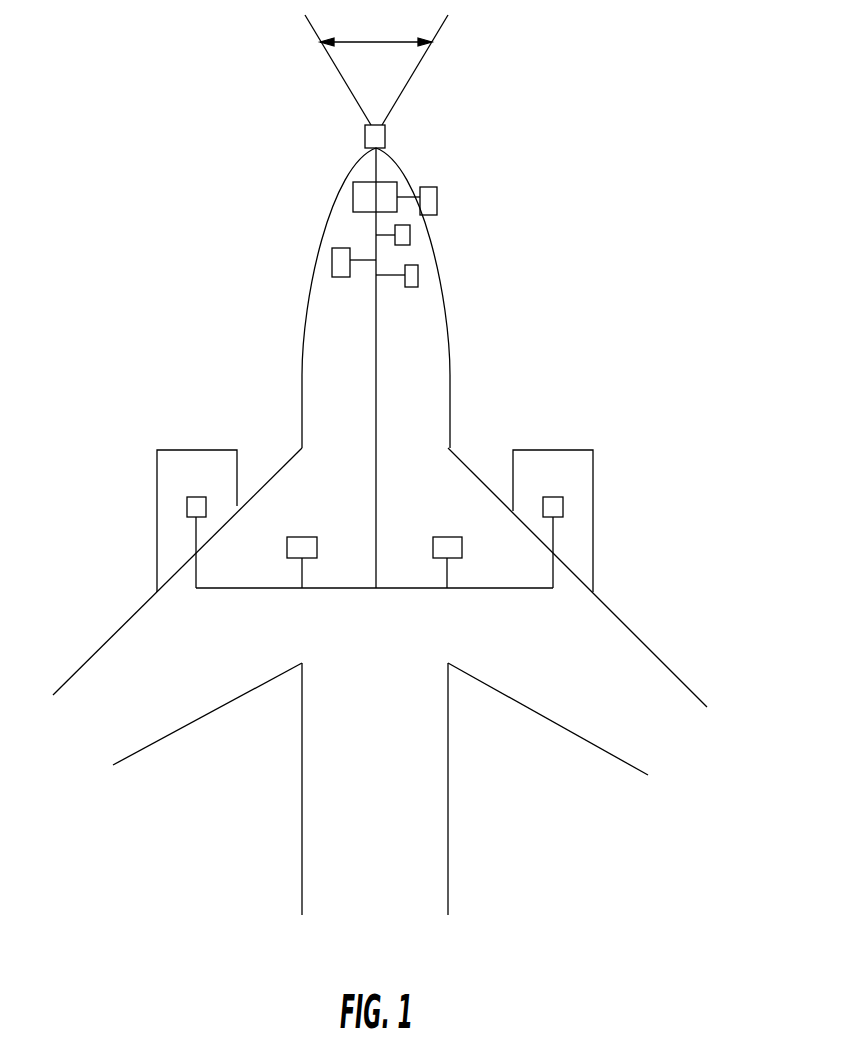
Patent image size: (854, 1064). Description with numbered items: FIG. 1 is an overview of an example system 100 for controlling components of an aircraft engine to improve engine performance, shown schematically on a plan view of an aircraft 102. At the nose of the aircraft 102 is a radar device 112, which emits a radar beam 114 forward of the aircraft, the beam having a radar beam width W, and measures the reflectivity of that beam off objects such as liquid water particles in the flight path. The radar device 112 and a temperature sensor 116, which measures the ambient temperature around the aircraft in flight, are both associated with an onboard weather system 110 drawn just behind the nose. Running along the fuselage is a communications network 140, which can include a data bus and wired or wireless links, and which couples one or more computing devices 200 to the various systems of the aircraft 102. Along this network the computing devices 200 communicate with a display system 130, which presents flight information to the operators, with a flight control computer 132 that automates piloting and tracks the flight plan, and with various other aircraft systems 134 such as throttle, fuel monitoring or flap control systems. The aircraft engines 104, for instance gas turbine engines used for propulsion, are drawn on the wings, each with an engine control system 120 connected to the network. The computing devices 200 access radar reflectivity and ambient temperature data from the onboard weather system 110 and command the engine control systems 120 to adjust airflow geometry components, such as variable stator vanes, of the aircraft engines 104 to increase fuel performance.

The system 100 is at (670, 170).
The aircraft 102 is at (437, 330).
The aircraft engines 104 is at (190, 462).
The onboard weather system 110 is at (353, 195).
The radar device 112 is at (385, 132).
The radar beam 114 is at (415, 70).
The temperature sensor 116 is at (437, 197).
The engine control systems 120 is at (187, 507).
The display system 130 is at (410, 235).
The flight control computer 132 is at (418, 276).
The aircraft systems 134 is at (297, 537).
The communications network 140 is at (376, 405).
The computing device(s) 200 is at (332, 262).